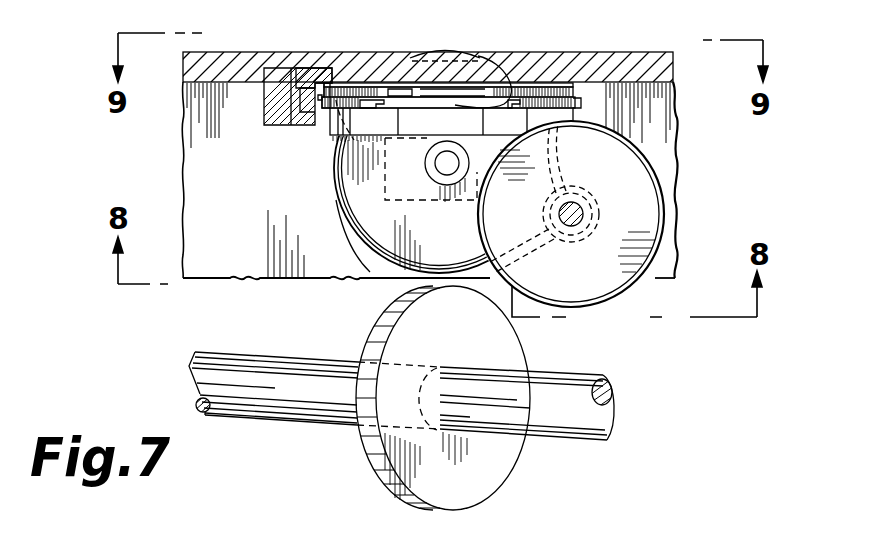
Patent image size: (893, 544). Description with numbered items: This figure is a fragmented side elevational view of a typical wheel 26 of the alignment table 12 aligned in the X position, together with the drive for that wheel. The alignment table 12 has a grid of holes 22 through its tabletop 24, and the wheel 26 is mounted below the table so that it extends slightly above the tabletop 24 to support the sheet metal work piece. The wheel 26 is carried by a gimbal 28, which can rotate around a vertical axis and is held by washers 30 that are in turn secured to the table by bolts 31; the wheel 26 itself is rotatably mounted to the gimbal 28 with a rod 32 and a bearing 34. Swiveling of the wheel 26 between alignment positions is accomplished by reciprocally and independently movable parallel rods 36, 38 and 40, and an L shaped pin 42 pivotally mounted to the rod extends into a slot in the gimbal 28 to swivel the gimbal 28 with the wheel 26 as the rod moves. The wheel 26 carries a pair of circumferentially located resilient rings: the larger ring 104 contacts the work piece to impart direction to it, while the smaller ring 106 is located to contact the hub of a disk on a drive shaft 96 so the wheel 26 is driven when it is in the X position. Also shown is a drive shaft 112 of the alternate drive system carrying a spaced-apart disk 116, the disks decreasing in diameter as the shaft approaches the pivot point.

The alignment table 12 is at (650, 50).
The hole 22 is at (388, 82).
The tabletop 24 is at (600, 52).
The wheel 26 is at (336, 177).
The gimbal 28 is at (573, 105).
The washers 30 is at (360, 90).
The bolts 31 is at (408, 108).
The rod 32 is at (427, 158).
The bearing 34 is at (437, 174).
The parallel rod 36 is at (314, 127).
The parallel rod 38 is at (265, 107).
The parallel rod 40 is at (299, 68).
The L shaped pin 42 is at (321, 53).
The drive shaft 96 is at (585, 211).
The resilient ring 104 is at (448, 51).
The resilient ring 106 is at (366, 246).
The drive shaft 112 is at (585, 376).
The disk 116 is at (505, 348).